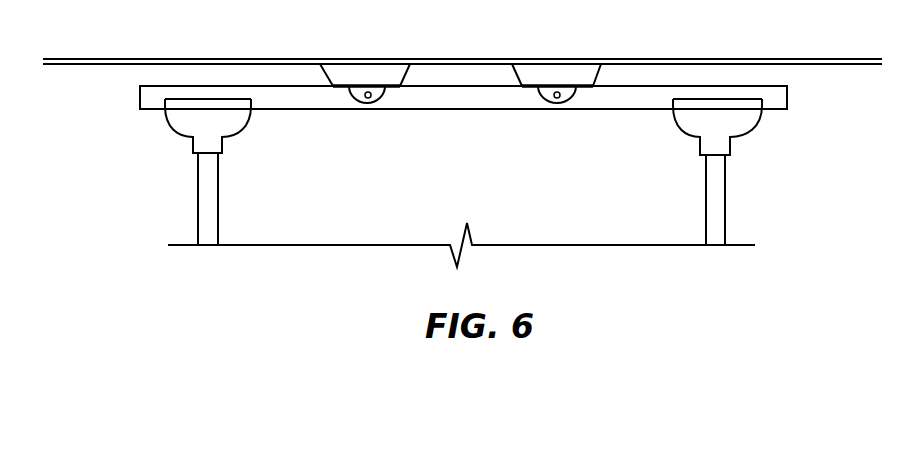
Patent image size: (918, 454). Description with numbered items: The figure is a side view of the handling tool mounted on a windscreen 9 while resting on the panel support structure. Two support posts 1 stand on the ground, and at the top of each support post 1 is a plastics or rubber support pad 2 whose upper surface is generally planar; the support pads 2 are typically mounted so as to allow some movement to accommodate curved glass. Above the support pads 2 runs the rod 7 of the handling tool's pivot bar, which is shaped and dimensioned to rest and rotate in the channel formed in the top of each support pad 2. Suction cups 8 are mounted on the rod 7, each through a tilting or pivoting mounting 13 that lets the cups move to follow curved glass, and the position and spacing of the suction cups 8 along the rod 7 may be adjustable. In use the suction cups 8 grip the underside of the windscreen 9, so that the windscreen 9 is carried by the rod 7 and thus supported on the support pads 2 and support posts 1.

The support post 1 is at (222, 225).
The support pad 2 is at (748, 132).
The rod 7 is at (647, 111).
The suction cups 8 is at (410, 69).
The windscreen 9 is at (106, 56).
The tilting or pivoting mounting 13 is at (370, 106).